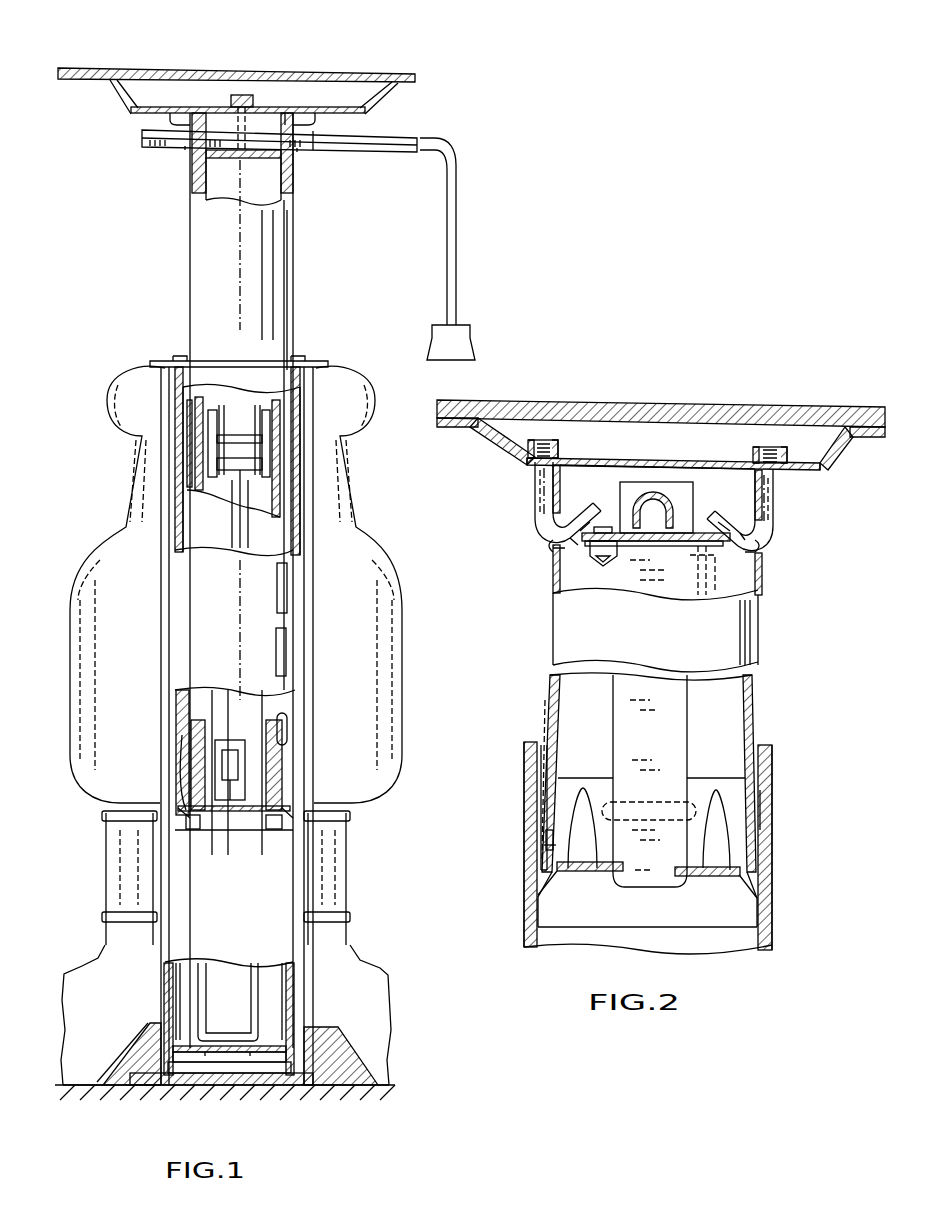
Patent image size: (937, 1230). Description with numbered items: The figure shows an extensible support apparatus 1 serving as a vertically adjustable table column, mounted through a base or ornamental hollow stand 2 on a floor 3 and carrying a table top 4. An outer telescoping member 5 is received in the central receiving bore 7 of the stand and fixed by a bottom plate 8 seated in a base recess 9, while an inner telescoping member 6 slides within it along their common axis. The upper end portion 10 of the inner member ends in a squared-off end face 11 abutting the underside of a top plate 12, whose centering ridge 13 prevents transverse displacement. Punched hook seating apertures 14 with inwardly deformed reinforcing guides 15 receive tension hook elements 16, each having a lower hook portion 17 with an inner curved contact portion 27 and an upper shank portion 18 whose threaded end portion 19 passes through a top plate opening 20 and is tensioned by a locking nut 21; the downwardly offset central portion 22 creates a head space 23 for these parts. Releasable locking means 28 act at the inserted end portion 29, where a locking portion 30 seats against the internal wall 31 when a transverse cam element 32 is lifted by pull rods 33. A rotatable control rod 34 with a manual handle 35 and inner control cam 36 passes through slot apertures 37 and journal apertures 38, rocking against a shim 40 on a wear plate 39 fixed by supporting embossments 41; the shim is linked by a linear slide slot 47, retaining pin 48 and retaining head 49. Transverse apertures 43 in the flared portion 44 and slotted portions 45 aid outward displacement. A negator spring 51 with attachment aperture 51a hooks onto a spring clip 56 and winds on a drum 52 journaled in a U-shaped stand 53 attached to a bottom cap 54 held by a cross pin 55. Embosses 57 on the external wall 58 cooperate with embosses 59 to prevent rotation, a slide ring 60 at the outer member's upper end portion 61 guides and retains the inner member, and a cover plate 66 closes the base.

In FIG. 1, the extensible support apparatus 1 is at (175, 248).
In FIG. 2, the extensible support apparatus 1 is at (540, 615).
In FIG. 1, the base or ornamental hollow stand 2 is at (177, 20).
In FIG. 1, the support surface or floor 3 is at (150, 1090).
In FIG. 1, the table top 4 is at (110, 70).
In FIG. 2, the table top 4 is at (855, 406).
In FIG. 1, the outer hollow tubular telescoping member 5 is at (165, 600).
In FIG. 2, the outer hollow tubular telescoping member 5 is at (772, 932).
In FIG. 1, the inner hollow tubular telescoping member 6 is at (197, 278).
In FIG. 2, the inner hollow tubular telescoping member 6 is at (758, 605).
In FIG. 1, the central receiving bore 7 is at (310, 395).
In FIG. 1, the bottom plate 8 is at (265, 1078).
In FIG. 1, the base recess 9 is at (332, 1052).
In FIG. 1, the upper end portion 10 is at (300, 118).
In FIG. 2, the upper end portion 10 is at (762, 500).
In FIG. 1, the transverse end face 11 is at (288, 106).
In FIG. 2, the transverse end face 11 is at (582, 460).
In FIG. 1, the top plate 12 is at (363, 103).
In FIG. 2, the top plate 12 is at (632, 460).
In FIG. 1, the centering ridge 13 is at (182, 112).
In FIG. 2, the centering ridge 13 is at (535, 492).
In FIG. 2, the hook seating aperture 14 is at (560, 555).
In FIG. 2, the reinforcing guide 15 is at (553, 514).
In FIG. 1, the tension connection hook element 16 is at (241, 96).
In FIG. 2, the tension connection hook element 16 is at (568, 530).
In FIG. 2, the lower hook portion 17 is at (712, 515).
In FIG. 2, the upper shank portion 18 is at (540, 502).
In FIG. 2, the threaded end portion 19 is at (547, 440).
In FIG. 2, the top plate opening 20 is at (531, 455).
In FIG. 2, the locking nut 21 is at (558, 452).
In FIG. 2, the downwardly offset central portion 22 is at (470, 438).
In FIG. 2, the head space 23 is at (638, 458).
In FIG. 2, the inner curved contact portion 27 is at (553, 545).
In FIG. 1, the releasable locking means 28 is at (290, 812).
In FIG. 2, the releasable locking means 28 is at (752, 895).
In FIG. 1, the inserted end portion 29 is at (185, 730).
In FIG. 2, the inserted end portion 29 is at (766, 782).
In FIG. 2, the locking portion 30 is at (766, 855).
In FIG. 1, the internal wall 31 is at (292, 494).
In FIG. 2, the internal wall 31 is at (768, 762).
In FIG. 1, the transverse cam element 32 is at (205, 806).
In FIG. 2, the transverse cam element 32 is at (735, 928).
In FIG. 1, the pull rod 33 is at (193, 185).
In FIG. 2, the pull rod 33 is at (625, 500).
In FIG. 1, the rotatable control rod 34 is at (310, 133).
In FIG. 1, the manual handle 35 is at (452, 233).
In FIG. 1, the inner central control cam 36 is at (232, 160).
In FIG. 2, the inner central control cam 36 is at (655, 562).
In FIG. 1, the slot aperture 37 is at (185, 148).
In FIG. 2, the slot aperture 37 is at (678, 533).
In FIG. 1, the journal aperture 38 is at (276, 157).
In FIG. 2, the journal aperture 38 is at (650, 548).
In FIG. 1, the wear plate 39 is at (195, 162).
In FIG. 2, the wear plate 39 is at (630, 548).
In FIG. 2, the shim or slide leaf 40 is at (690, 548).
In FIG. 2, the supporting embossment 41 is at (700, 570).
In FIG. 2, the transverse aperture 43 is at (762, 810).
In FIG. 1, the transitional outwardly flared portion 44 is at (186, 772).
In FIG. 2, the transitional outwardly flared portion 44 is at (580, 780).
In FIG. 2, the downwardly open slotted portion 45 is at (593, 873).
In FIG. 2, the linear slide slot 47 is at (614, 548).
In FIG. 2, the retaining rivet or pin 48 is at (600, 552).
In FIG. 2, the retaining head 49 is at (597, 530).
In FIG. 1, the negator spring 51 is at (242, 430).
In FIG. 2, the negator spring 51 is at (548, 715).
In FIG. 1, the attachment aperture 51a is at (232, 760).
In FIG. 1, the spring wind-up drum 52 is at (226, 420).
In FIG. 1, the U-shaped stand 53 is at (262, 967).
In FIG. 1, the bottom cap 54 is at (250, 1040).
In FIG. 1, the cross pin 55 is at (243, 1062).
In FIG. 1, the spring clip 56 is at (228, 810).
In FIG. 2, the spring clip 56 is at (548, 850).
In FIG. 1, the outwardly directed emboss 57 is at (287, 725).
In FIG. 1, the external wall 58 is at (280, 660).
In FIG. 2, the external wall 58 is at (756, 735).
In FIG. 1, the outwardly directed emboss 59 is at (282, 585).
In FIG. 1, the slide ring 60 is at (180, 378).
In FIG. 1, the upper end portion of outer member 61 is at (165, 363).
In FIG. 1, the cover plate 66 is at (293, 360).